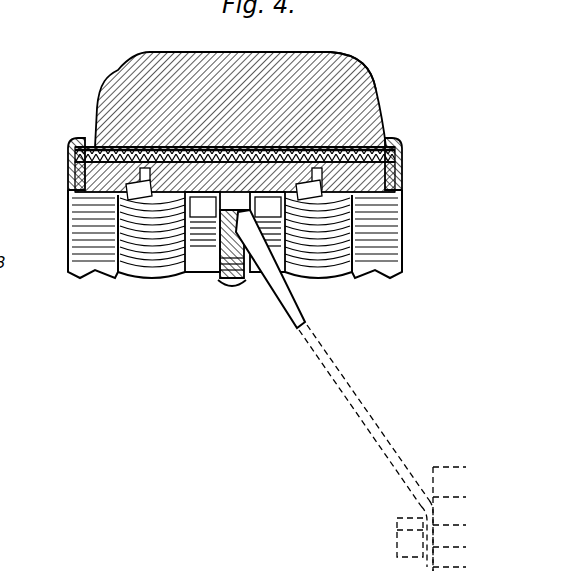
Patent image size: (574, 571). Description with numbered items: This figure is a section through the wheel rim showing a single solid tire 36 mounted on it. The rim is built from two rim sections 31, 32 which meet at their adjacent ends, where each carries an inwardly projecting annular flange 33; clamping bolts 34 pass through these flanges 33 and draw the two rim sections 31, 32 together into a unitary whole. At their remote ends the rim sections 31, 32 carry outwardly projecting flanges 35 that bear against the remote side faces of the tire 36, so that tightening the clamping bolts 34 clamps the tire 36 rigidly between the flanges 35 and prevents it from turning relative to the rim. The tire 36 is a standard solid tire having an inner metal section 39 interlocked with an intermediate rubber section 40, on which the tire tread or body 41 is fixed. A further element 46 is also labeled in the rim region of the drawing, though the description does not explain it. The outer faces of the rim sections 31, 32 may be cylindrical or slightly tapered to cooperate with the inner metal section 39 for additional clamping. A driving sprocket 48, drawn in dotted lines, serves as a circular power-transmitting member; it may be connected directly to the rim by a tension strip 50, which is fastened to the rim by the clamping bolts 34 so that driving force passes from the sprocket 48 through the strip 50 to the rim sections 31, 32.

The rim section 31 is at (72, 198).
The rim section 32 is at (386, 212).
The inwardly projecting annular flange 33 is at (237, 276).
The clamping bolt 34 is at (203, 243).
The outwardly projecting flange 35 is at (66, 162).
The tire 36 is at (350, 98).
The inner metal section 39 is at (390, 148).
The intermediate rubber section 40 is at (345, 152).
The tire tread 41 is at (372, 66).
The screw 46 is at (148, 182).
The driving sprocket 48 is at (447, 467).
The tension strip 50 is at (297, 325).